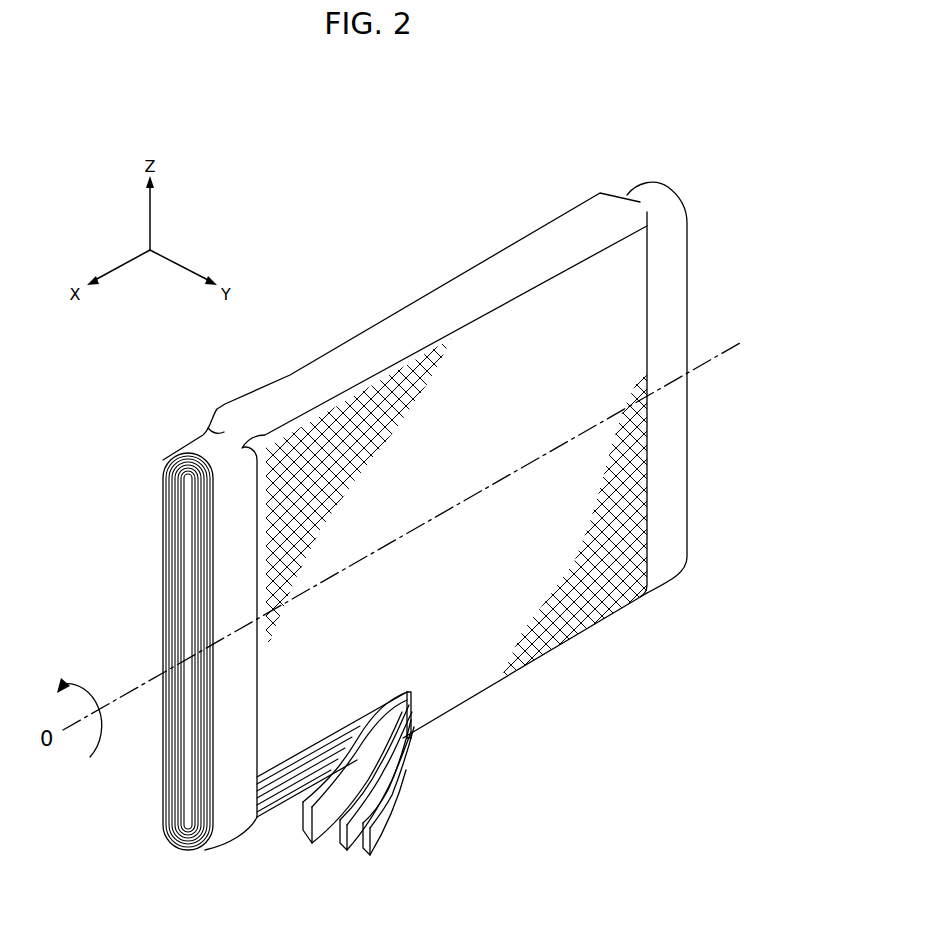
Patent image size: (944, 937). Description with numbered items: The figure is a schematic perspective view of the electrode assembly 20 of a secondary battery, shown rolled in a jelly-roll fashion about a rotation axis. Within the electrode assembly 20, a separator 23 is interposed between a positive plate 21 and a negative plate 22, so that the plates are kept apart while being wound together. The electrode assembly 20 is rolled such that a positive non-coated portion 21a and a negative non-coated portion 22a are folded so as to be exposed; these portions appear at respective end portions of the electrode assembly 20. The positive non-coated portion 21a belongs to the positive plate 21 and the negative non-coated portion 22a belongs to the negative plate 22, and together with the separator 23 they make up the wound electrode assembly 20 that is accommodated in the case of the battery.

The electrode assembly 20 is at (423, 287).
The positive plate 21 is at (300, 820).
The positive non-coated portion 21a is at (230, 748).
The negative plate 22 is at (347, 843).
The negative non-coated portion 22a is at (673, 507).
The separator 23 is at (313, 843).